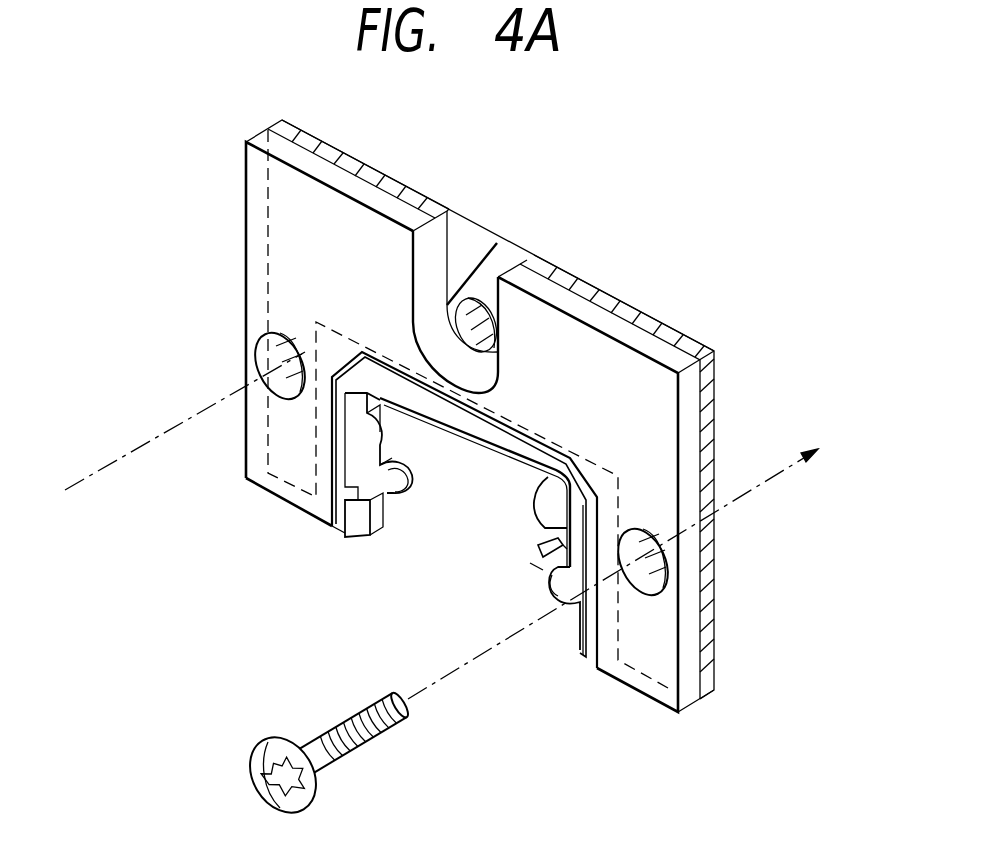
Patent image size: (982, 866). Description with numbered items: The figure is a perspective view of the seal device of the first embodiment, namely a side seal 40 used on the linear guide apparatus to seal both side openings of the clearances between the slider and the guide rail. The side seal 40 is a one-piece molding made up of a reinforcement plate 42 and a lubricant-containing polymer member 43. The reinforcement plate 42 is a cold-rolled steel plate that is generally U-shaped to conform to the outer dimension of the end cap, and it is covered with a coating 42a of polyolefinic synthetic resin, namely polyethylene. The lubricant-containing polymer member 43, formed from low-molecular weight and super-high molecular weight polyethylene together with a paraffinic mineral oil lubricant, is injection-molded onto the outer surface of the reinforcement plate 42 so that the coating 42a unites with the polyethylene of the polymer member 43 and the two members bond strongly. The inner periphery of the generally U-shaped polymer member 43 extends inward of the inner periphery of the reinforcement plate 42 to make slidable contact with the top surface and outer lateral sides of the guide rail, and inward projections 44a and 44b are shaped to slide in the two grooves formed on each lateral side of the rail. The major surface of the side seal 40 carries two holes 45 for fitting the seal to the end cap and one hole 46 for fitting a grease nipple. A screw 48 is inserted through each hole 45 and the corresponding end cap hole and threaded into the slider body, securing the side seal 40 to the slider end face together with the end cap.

The side seal 40 is at (604, 276).
The reinforcement plate 42 is at (476, 218).
The coating 42a is at (443, 228).
The lubricant-containing polymer member 43 is at (264, 245).
The inward projection 44a is at (382, 400).
The inward projection 44b is at (410, 488).
The hole 45 is at (266, 358).
The hole 46 is at (490, 330).
The screw 48 is at (272, 740).